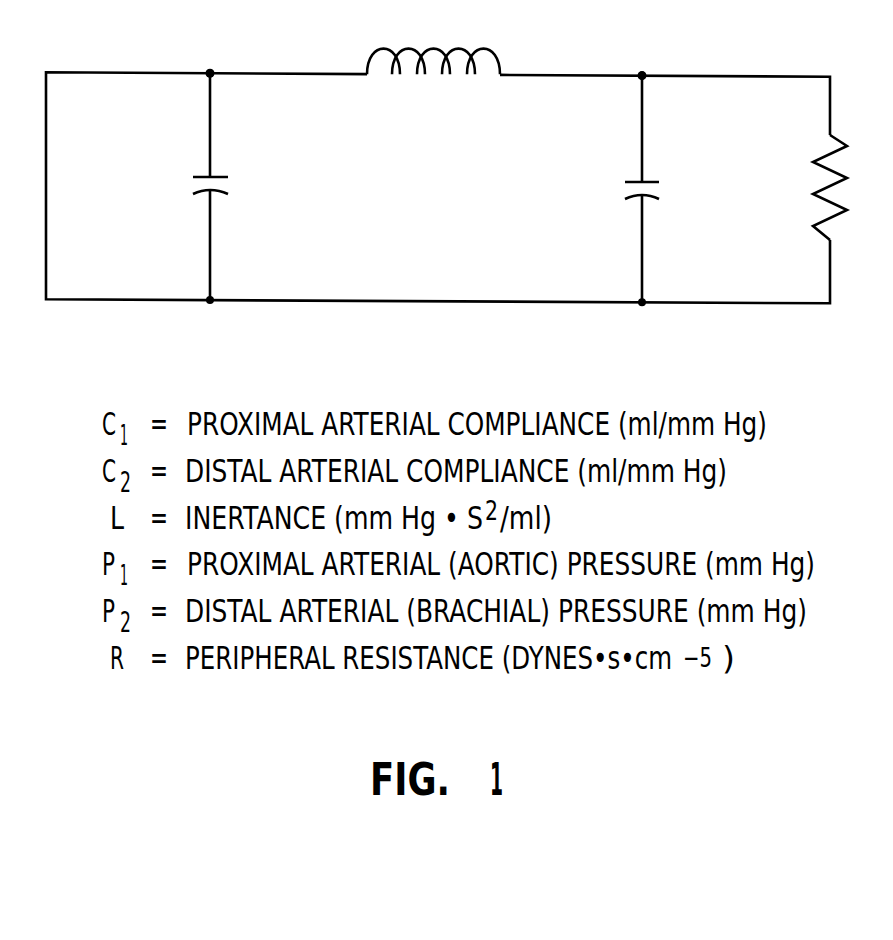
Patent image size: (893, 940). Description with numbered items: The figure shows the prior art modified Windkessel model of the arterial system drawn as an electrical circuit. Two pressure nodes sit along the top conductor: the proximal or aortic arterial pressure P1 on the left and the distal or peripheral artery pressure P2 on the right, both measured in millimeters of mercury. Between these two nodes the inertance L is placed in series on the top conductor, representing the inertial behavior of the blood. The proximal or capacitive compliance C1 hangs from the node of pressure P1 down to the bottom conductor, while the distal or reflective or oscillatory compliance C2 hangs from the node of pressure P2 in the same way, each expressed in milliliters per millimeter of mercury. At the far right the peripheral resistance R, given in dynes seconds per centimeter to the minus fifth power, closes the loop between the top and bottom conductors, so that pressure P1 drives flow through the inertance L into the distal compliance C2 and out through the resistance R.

The proximal or capacitive compliance C1 is at (190, 186).
The distal or reflective or oscillatory compliance C2 is at (621, 189).
The inertance L is at (433, 40).
The proximal or aortic arterial pressure P1 is at (211, 48).
The distal or peripheral artery pressure P2 is at (645, 50).
The peripheral resistance R is at (813, 187).